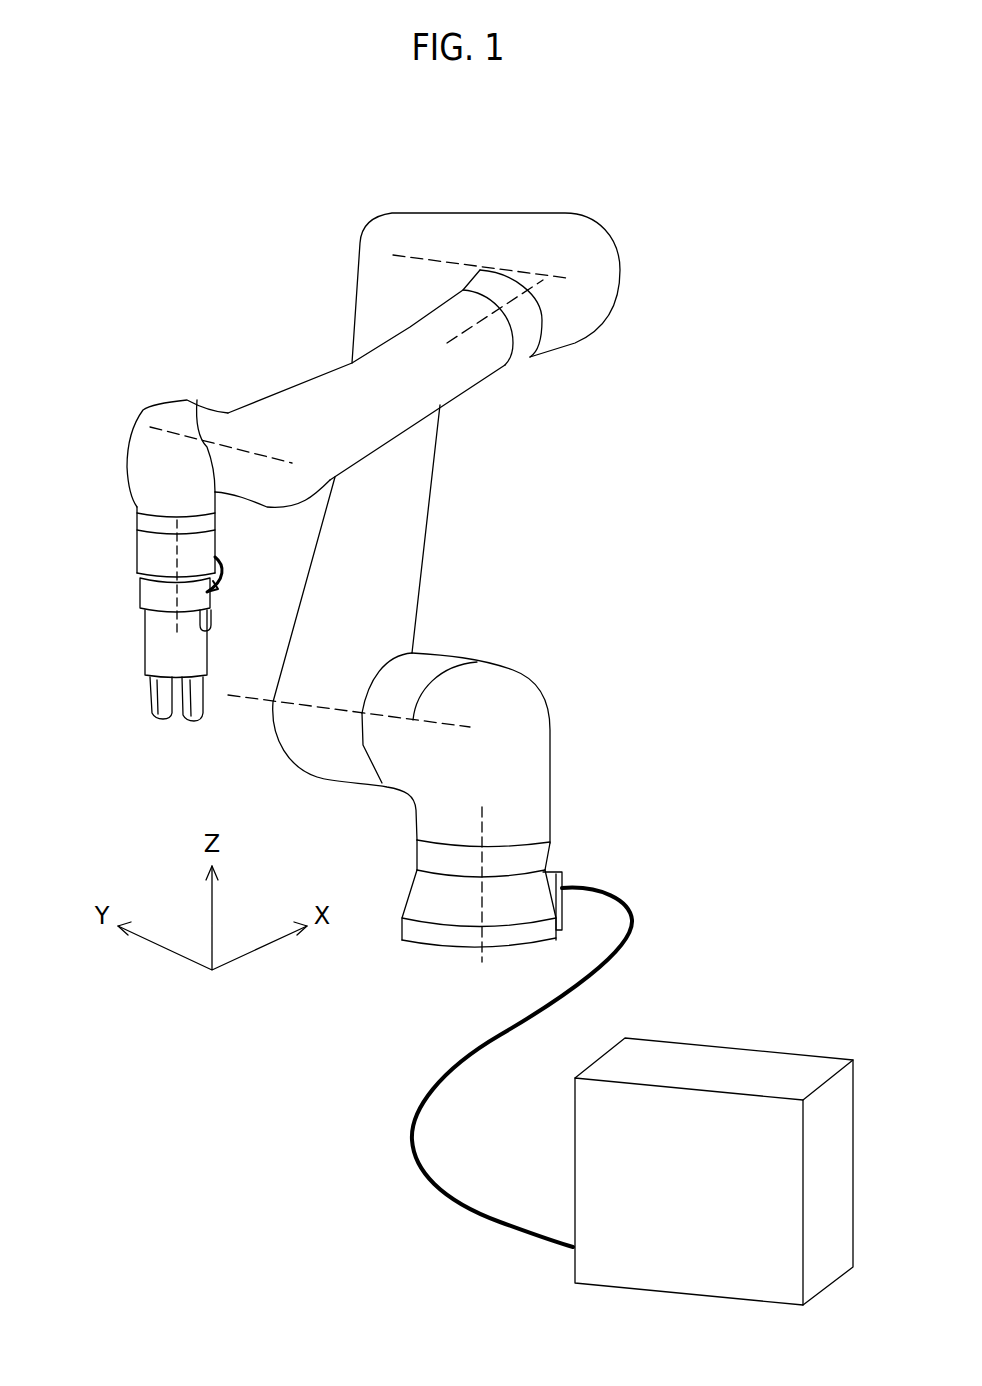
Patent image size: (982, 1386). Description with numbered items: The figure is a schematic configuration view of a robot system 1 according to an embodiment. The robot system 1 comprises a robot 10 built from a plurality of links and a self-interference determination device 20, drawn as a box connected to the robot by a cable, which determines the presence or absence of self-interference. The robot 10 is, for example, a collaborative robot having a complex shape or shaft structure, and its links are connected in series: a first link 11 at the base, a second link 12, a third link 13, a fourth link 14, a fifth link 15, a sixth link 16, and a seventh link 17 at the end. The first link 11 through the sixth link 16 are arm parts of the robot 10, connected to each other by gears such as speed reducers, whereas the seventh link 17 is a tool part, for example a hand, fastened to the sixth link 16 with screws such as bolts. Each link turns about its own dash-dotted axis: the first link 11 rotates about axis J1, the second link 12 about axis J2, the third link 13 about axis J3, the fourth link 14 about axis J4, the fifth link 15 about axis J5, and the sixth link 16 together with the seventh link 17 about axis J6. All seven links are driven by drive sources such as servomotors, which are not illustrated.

The robot system 1 is at (677, 277).
The robot 10 is at (378, 213).
The first link 11 is at (507, 713).
The second link 12 is at (387, 527).
The third link 13 is at (573, 245).
The fourth link 14 is at (350, 403).
The fifth link 15 is at (172, 413).
The sixth link 16 is at (147, 550).
The seventh link 17 is at (162, 642).
The self-interference determination device 20 is at (723, 1047).
The axis J1 is at (483, 828).
The axis J2 is at (480, 663).
The axis J3 is at (417, 258).
The axis J4 is at (483, 327).
The axis J5 is at (188, 433).
The axis J6 is at (177, 597).